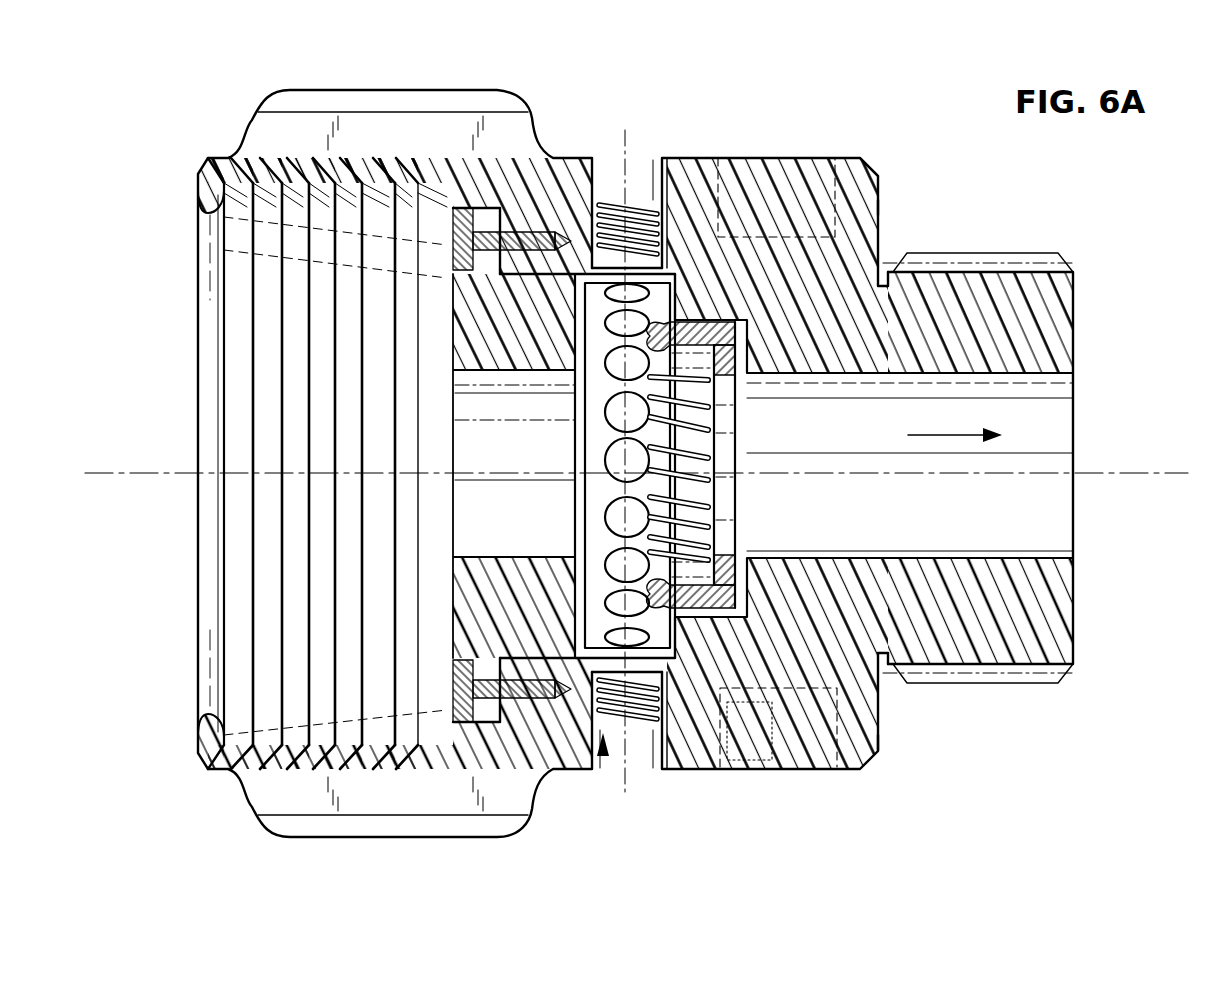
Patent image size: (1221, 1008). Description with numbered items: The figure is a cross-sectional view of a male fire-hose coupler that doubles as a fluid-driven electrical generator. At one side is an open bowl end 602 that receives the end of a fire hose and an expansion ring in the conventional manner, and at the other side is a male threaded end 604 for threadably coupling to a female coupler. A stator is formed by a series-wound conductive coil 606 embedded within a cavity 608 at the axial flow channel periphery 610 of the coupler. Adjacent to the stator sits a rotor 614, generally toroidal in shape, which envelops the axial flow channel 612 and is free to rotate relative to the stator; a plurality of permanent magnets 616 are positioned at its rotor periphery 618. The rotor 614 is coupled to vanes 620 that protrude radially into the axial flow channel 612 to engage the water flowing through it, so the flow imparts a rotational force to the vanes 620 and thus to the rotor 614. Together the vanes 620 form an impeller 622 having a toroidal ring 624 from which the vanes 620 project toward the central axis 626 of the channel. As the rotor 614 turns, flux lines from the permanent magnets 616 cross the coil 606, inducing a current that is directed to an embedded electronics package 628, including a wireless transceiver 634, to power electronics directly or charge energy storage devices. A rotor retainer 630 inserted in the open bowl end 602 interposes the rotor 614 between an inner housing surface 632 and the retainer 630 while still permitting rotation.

The open bowl end 602 is at (172, 366).
The male threaded end 604 is at (1010, 253).
The series-wound conductive coil 606 is at (618, 722).
The cavity 608 is at (602, 757).
The axial flow channel periphery 610 is at (675, 690).
The axial flow channel 612 is at (910, 467).
The rotor 614 is at (610, 432).
The permanent magnets 616 is at (464, 246).
The rotor periphery 618 is at (668, 672).
The vanes 620 is at (709, 493).
The impeller 622 is at (740, 505).
The toroidal ring 624 is at (740, 548).
The central axis 626 is at (1146, 474).
The embedded electronics package 628 is at (852, 208).
The rotor retainer 630 is at (470, 210).
The inner housing surface 632 is at (872, 177).
The wireless transceiver 634 is at (775, 746).